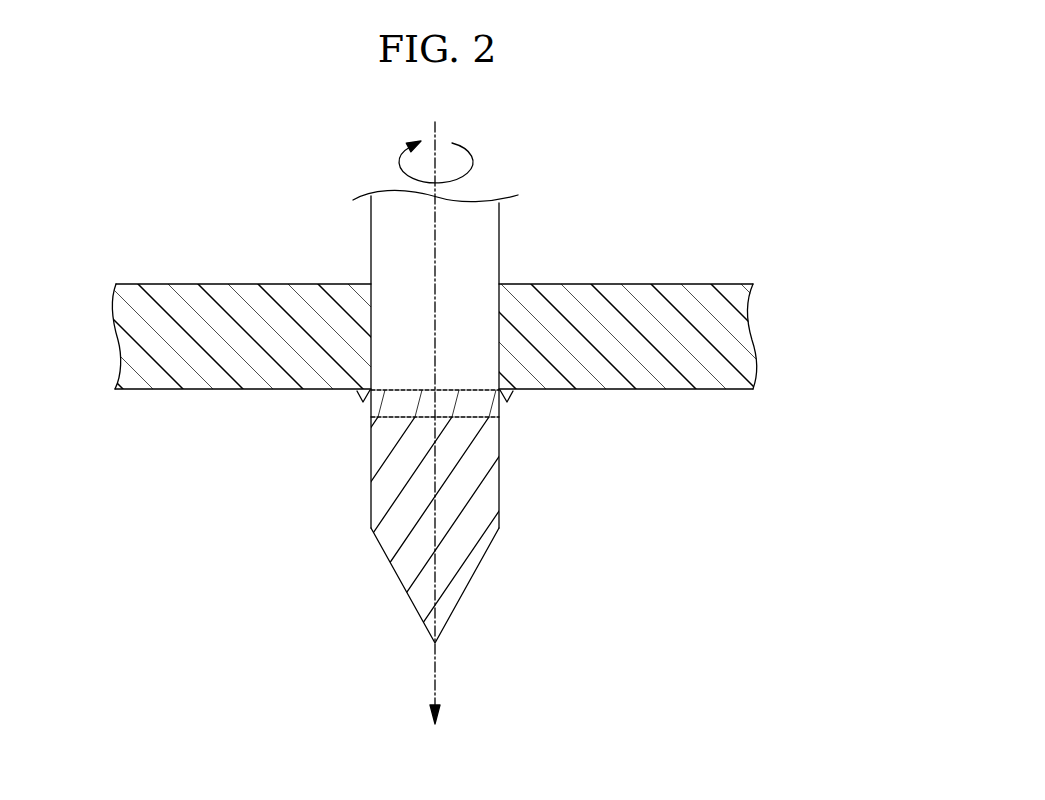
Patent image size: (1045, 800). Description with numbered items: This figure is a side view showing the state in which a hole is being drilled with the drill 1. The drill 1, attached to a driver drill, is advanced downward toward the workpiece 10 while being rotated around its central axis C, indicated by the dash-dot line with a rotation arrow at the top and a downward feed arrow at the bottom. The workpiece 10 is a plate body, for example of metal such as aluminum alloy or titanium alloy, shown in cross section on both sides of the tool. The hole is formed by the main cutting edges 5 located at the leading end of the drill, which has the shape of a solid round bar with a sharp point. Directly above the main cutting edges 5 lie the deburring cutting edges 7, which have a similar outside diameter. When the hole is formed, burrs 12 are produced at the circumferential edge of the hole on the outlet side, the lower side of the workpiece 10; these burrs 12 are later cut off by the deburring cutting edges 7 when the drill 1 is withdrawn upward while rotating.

The drill 1 is at (340, 226).
The central axis C is at (437, 132).
The workpiece 10 is at (679, 283).
The burrs 12 is at (359, 397).
The deburring cutting edges 7 is at (493, 408).
The main cutting edges 5 is at (481, 485).